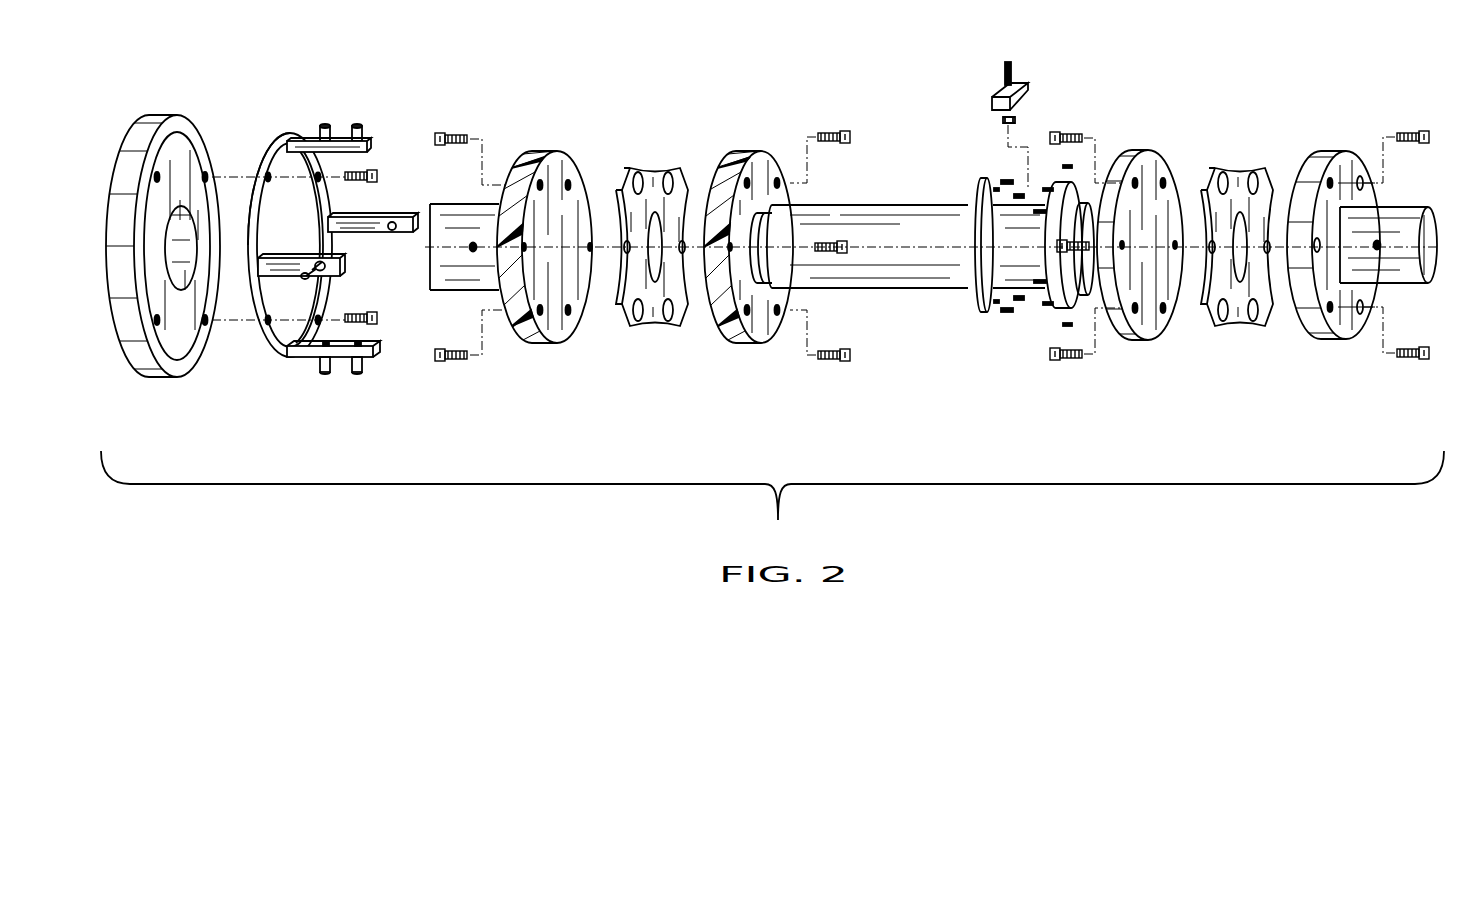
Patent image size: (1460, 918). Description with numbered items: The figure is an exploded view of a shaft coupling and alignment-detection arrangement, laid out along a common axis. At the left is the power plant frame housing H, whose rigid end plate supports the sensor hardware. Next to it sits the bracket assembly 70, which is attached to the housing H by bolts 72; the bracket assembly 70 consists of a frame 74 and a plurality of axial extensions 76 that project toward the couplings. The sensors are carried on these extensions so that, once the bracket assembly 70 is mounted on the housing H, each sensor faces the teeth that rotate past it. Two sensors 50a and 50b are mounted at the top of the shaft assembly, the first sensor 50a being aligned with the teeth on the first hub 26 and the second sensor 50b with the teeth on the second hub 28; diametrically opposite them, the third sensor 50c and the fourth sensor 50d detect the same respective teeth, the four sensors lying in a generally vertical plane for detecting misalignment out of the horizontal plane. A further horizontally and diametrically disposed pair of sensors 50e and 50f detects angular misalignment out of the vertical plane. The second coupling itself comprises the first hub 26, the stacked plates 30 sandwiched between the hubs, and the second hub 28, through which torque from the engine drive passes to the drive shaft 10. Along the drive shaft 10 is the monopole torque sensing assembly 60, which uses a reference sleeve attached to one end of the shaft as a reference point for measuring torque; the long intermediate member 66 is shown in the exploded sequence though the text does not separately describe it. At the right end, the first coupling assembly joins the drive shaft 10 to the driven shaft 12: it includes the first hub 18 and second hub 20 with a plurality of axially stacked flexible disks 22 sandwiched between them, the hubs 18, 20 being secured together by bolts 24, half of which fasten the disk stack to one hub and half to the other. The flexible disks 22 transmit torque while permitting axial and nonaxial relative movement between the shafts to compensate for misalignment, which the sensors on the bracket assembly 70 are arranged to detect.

The housing H is at (152, 134).
The drive shaft 10 is at (754, 265).
The driven shaft 12 is at (1403, 223).
The first hub 18 is at (1153, 168).
The second hub 20 is at (1328, 148).
The flexible disks 22 is at (1240, 175).
The bolts 24 is at (1068, 134).
The first hub 26 is at (560, 212).
The second hub 28 is at (765, 170).
The stacked plates 30 is at (654, 177).
The first sensor 50a is at (320, 128).
The second sensor 50b is at (358, 128).
The third sensor 50c is at (325, 372).
The fourth sensor 50d is at (360, 368).
The sensor 50e is at (318, 257).
The sensor 50f is at (390, 222).
The monopole torque sensing assembly 60 is at (995, 81).
The tubular spacer 66 is at (892, 222).
The bracket assembly 70 is at (266, 150).
The bolts 72 is at (374, 170).
The frame 74 is at (262, 166).
The axial extensions 76 is at (343, 142).